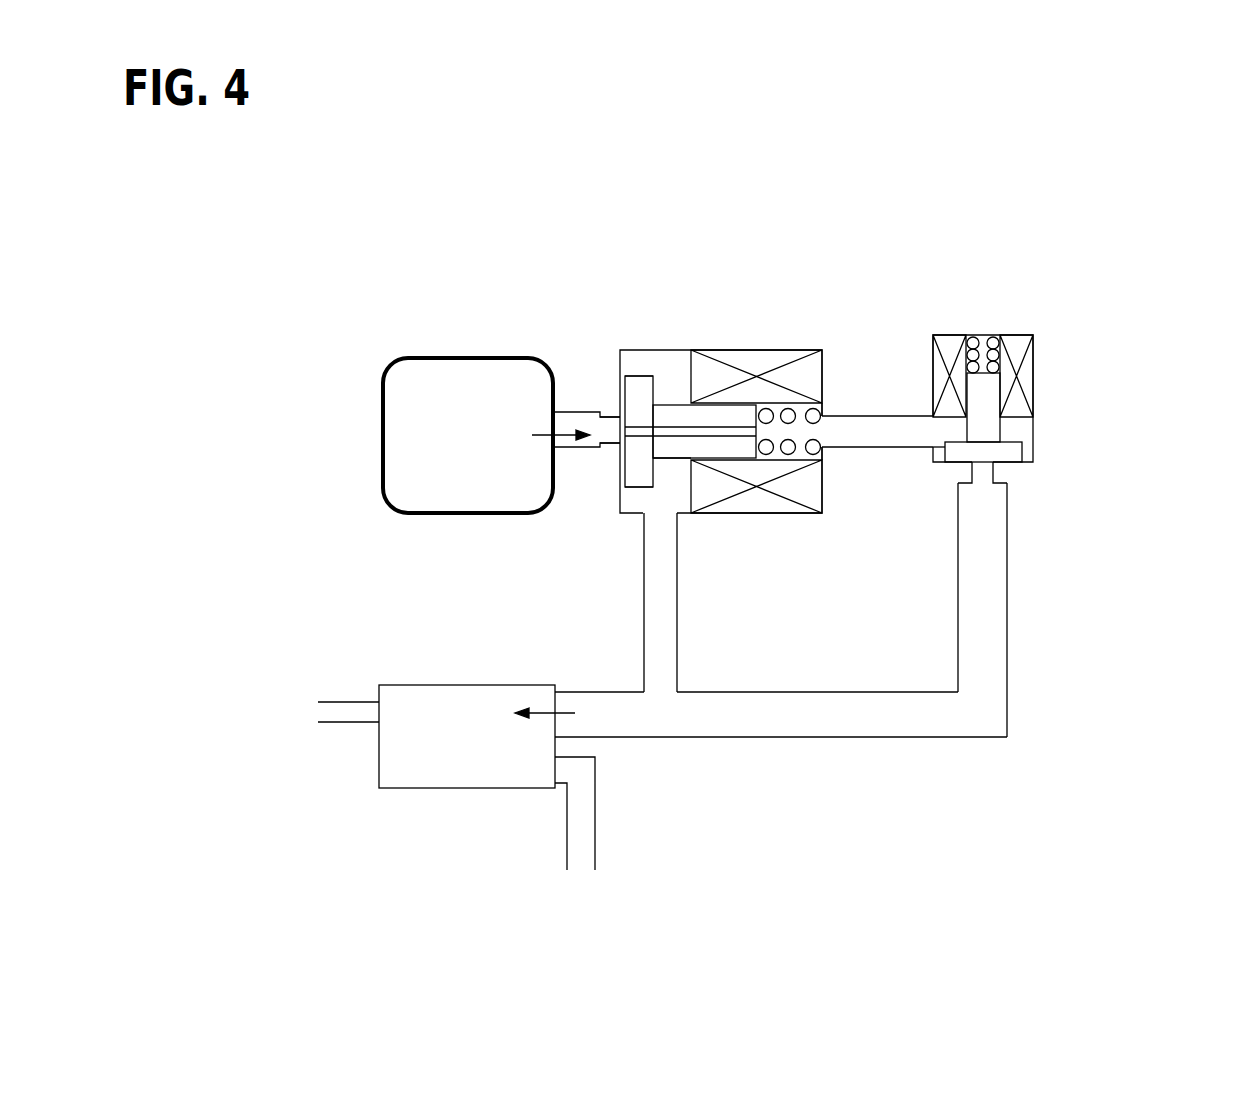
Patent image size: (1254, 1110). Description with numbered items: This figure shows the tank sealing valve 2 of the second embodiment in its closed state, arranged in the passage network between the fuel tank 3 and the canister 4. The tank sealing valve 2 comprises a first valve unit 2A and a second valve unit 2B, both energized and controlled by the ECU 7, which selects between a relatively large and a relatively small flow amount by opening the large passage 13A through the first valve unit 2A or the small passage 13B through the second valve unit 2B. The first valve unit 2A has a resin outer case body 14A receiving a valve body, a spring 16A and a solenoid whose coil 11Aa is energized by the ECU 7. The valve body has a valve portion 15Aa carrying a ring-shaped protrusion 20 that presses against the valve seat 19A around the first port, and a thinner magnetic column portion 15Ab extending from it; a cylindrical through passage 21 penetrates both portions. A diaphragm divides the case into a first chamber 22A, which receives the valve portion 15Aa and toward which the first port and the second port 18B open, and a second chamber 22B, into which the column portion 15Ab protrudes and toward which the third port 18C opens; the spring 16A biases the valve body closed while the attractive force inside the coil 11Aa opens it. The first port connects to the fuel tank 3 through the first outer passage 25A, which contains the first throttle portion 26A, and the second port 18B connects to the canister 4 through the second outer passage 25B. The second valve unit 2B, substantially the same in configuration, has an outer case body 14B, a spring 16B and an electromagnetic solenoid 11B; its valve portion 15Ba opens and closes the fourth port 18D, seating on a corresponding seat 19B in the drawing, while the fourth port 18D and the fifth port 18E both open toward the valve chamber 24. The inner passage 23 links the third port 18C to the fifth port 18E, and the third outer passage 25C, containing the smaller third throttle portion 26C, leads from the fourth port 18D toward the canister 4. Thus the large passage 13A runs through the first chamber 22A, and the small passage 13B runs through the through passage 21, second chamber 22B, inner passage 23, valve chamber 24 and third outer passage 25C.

The tank sealing valve 2 is at (1135, 217).
The first valve unit 2A is at (842, 317).
The second valve unit 2B is at (1064, 335).
The fuel tank 3 is at (402, 433).
The canister 4 is at (402, 762).
The ECU 7 is at (682, 483).
The coil 11Aa is at (777, 362).
The electromagnetic solenoid 11B is at (1015, 343).
The large passage 13A is at (573, 393).
The small passage 13B is at (1012, 750).
The outer case body 14A is at (663, 343).
The outer case body 14B is at (1037, 392).
The valve portion 15Aa is at (633, 388).
The column portion 15Ab is at (732, 418).
The valve portion 15Ba is at (1007, 453).
The spring 16A is at (828, 413).
The spring 16B is at (972, 335).
The second port 18B is at (650, 513).
The third port 18C is at (830, 438).
The fourth port 18D is at (1000, 477).
The fifth port 18E is at (930, 438).
The valve seat 19A is at (638, 473).
The second port 19B is at (942, 457).
The protrusion 20 is at (623, 470).
The through passage 21 is at (718, 432).
The first chamber 22A is at (640, 365).
The second chamber 22B is at (852, 418).
The inner passage 23 is at (863, 438).
The valve chamber 24 is at (1022, 435).
The first outer passage 25A is at (618, 430).
The second outer passage 25B is at (663, 655).
The third outer passage 25C is at (992, 635).
The first throttle portion 26A is at (617, 417).
The third throttle portion 26C is at (980, 477).